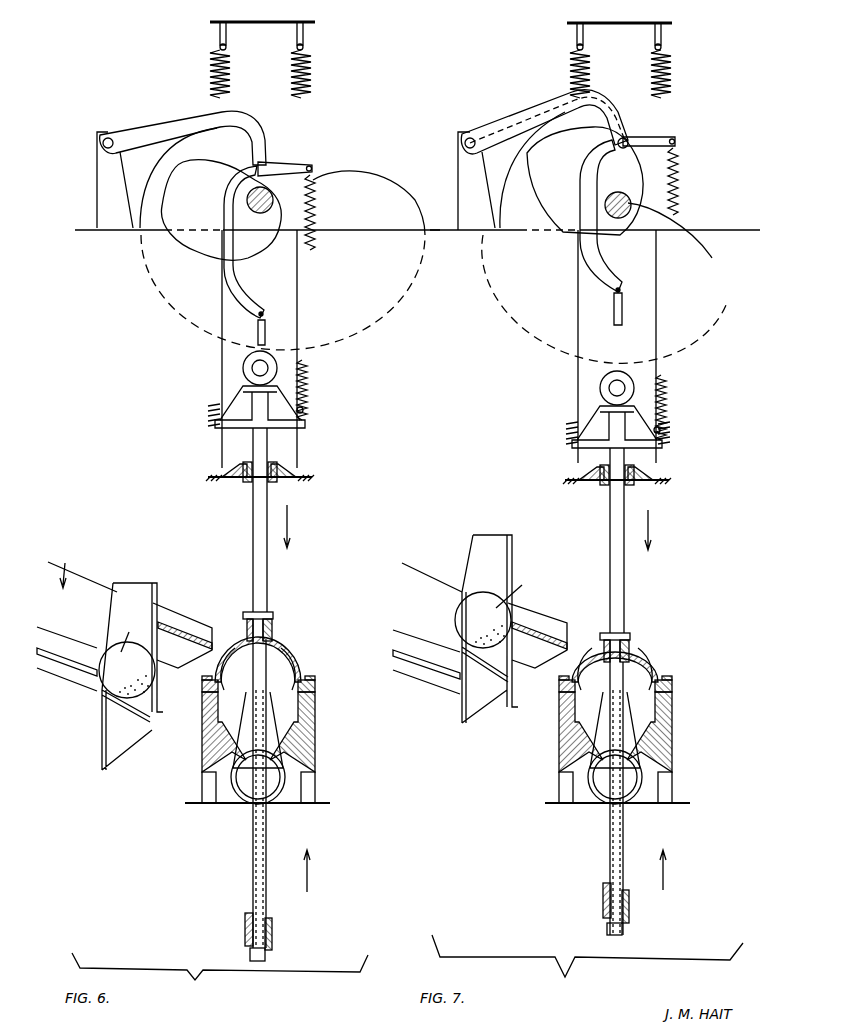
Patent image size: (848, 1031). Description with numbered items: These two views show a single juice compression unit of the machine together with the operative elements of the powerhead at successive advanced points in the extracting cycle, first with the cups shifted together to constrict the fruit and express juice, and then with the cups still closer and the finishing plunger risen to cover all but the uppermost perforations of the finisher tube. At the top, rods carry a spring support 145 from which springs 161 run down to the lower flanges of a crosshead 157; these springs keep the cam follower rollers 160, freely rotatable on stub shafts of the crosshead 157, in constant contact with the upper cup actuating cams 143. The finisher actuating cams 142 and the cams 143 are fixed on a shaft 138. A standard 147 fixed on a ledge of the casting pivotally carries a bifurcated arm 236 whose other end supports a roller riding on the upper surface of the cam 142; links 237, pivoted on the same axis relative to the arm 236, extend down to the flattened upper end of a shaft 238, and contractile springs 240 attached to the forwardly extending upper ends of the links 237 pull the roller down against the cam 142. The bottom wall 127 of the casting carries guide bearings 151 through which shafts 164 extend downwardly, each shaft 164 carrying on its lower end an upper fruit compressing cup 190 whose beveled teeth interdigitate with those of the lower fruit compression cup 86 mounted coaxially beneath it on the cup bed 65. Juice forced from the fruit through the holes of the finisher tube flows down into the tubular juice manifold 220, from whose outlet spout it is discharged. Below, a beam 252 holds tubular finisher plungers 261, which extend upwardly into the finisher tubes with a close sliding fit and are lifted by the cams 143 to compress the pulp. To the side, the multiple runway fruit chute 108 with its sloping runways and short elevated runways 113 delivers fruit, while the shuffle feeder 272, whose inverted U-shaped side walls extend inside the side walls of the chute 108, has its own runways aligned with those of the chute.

In FIG. 6, the cup bed 65 is at (312, 735).
In FIG. 7, the cup bed 65 is at (668, 735).
In FIG. 6, the lower fruit compression cup 86 is at (302, 672).
In FIG. 7, the lower fruit compression cup 86 is at (659, 672).
In FIG. 6, the multiple runway fruit chute 108 is at (77, 617).
In FIG. 7, the multiple runway fruit chute 108 is at (427, 628).
In FIG. 6, the short elevated runways 113 is at (185, 620).
In FIG. 7, the short elevated runways 113 is at (540, 622).
In FIG. 6, the bottom wall 127 is at (296, 480).
In FIG. 7, the bottom wall 127 is at (652, 483).
In FIG. 6, the shaft 138 is at (249, 206).
In FIG. 7, the shaft 138 is at (622, 218).
In FIG. 6, the finisher actuating cams 142 is at (208, 210).
In FIG. 7, the finisher actuating cams 142 is at (565, 177).
In FIG. 6, the upper cup actuating cams 143 is at (377, 211).
In FIG. 7, the upper cup actuating cams 143 is at (533, 217).
In FIG. 6, the spring support 145 is at (269, 26).
In FIG. 7, the spring support 145 is at (628, 28).
In FIG. 6, the standard 147 is at (101, 181).
In FIG. 7, the standard 147 is at (463, 136).
In FIG. 6, the guide bearings 151 is at (243, 479).
In FIG. 7, the guide bearings 151 is at (600, 483).
In FIG. 6, the crosshead 157 is at (258, 408).
In FIG. 7, the crosshead 157 is at (615, 428).
In FIG. 6, the cam follower rollers 160 is at (243, 370).
In FIG. 7, the cam follower rollers 160 is at (600, 391).
In FIG. 6, the springs 161 is at (206, 63).
In FIG. 7, the springs 161 is at (671, 76).
In FIG. 6, the shafts 164 is at (253, 508).
In FIG. 7, the shafts 164 is at (623, 513).
In FIG. 6, the upper fruit compressing cup 190 is at (272, 648).
In FIG. 7, the upper fruit compressing cup 190 is at (630, 652).
In FIG. 6, the tubular juice manifold 220 is at (285, 793).
In FIG. 7, the tubular juice manifold 220 is at (643, 795).
In FIG. 6, the bifurcated arms 236 is at (166, 125).
In FIG. 7, the bifurcated arms 236 is at (536, 118).
In FIG. 6, the links 237 is at (228, 272).
In FIG. 7, the links 237 is at (593, 263).
In FIG. 6, the shafts 238 is at (258, 331).
In FIG. 7, the shafts 238 is at (614, 316).
In FIG. 7, the contractile springs 240 is at (680, 174).
In FIG. 6, the beam 252 is at (245, 937).
In FIG. 7, the beam 252 is at (603, 909).
In FIG. 6, the tubular finisher plungers 261 is at (252, 856).
In FIG. 7, the tubular finisher plungers 261 is at (610, 856).
In FIG. 6, the shuffle feeder 272 is at (114, 752).
In FIG. 7, the shuffle feeder 272 is at (473, 707).